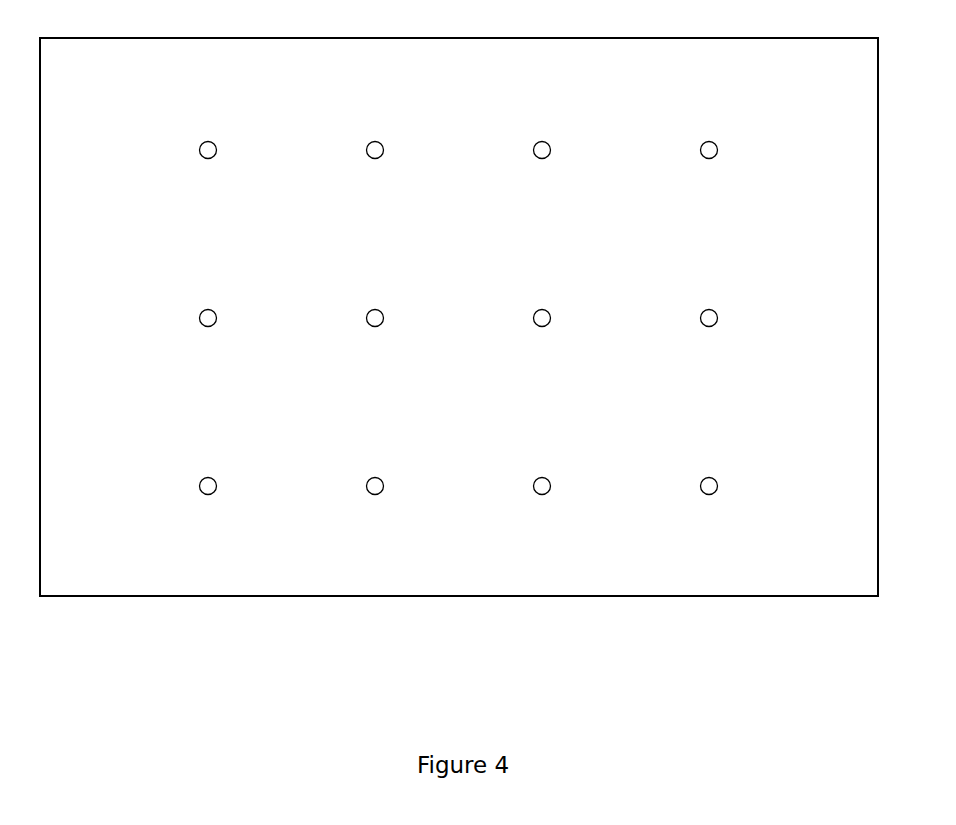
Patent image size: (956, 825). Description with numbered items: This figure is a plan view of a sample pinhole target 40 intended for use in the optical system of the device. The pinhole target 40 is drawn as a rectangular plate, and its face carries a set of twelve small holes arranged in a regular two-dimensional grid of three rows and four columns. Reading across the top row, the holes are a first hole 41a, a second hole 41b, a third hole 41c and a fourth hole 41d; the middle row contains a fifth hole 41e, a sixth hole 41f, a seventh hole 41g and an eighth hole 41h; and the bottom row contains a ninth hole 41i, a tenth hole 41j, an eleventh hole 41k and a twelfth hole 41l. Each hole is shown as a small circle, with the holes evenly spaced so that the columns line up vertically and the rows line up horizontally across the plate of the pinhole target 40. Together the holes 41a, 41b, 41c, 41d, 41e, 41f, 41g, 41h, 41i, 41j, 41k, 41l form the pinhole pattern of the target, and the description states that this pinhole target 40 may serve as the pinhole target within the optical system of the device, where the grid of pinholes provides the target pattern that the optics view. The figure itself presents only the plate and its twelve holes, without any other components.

The pinhole target 40 is at (767, 597).
The hole 41a is at (214, 129).
The hole 41b is at (382, 129).
The hole 41c is at (548, 129).
The hole 41d is at (716, 129).
The hole 41e is at (214, 297).
The hole 41f is at (379, 297).
The hole 41g is at (549, 297).
The hole 41h is at (716, 297).
The hole 41i is at (211, 468).
The hole 41j is at (378, 468).
The hole 41k is at (548, 468).
The hole 41l is at (712, 468).